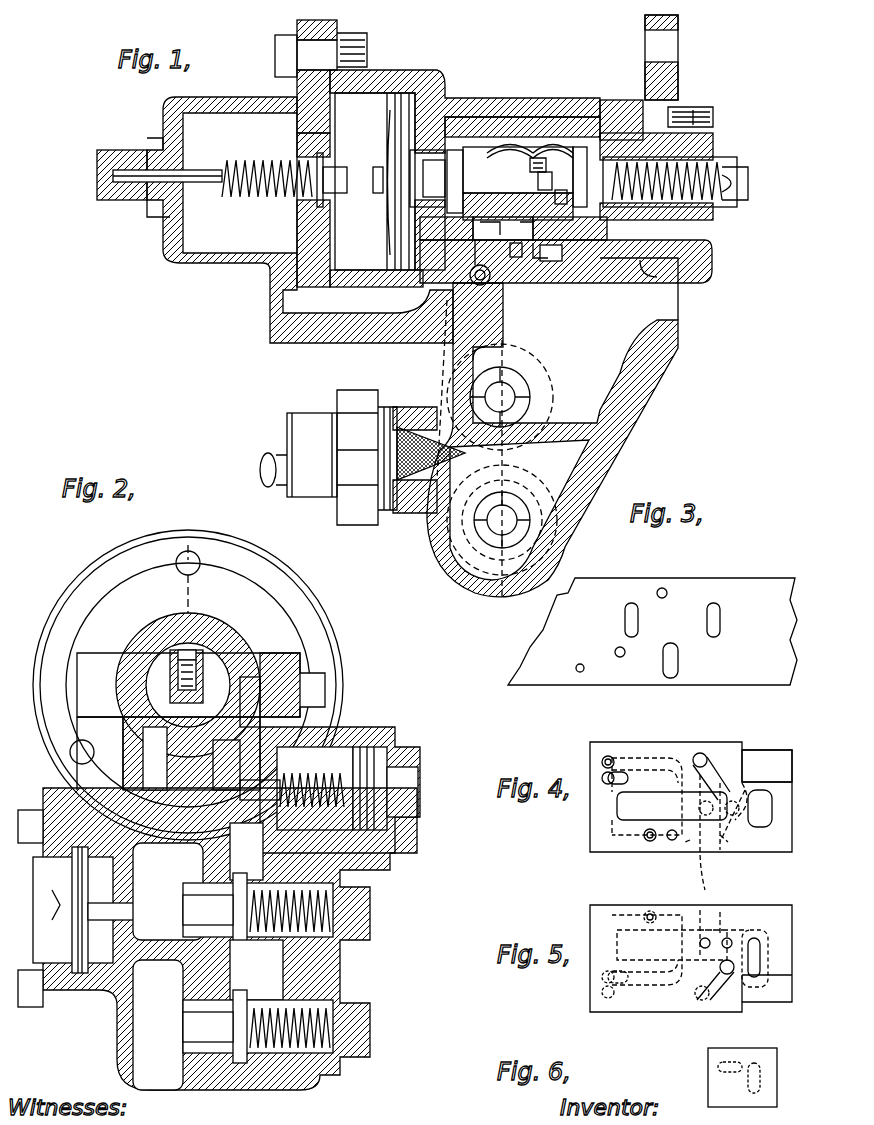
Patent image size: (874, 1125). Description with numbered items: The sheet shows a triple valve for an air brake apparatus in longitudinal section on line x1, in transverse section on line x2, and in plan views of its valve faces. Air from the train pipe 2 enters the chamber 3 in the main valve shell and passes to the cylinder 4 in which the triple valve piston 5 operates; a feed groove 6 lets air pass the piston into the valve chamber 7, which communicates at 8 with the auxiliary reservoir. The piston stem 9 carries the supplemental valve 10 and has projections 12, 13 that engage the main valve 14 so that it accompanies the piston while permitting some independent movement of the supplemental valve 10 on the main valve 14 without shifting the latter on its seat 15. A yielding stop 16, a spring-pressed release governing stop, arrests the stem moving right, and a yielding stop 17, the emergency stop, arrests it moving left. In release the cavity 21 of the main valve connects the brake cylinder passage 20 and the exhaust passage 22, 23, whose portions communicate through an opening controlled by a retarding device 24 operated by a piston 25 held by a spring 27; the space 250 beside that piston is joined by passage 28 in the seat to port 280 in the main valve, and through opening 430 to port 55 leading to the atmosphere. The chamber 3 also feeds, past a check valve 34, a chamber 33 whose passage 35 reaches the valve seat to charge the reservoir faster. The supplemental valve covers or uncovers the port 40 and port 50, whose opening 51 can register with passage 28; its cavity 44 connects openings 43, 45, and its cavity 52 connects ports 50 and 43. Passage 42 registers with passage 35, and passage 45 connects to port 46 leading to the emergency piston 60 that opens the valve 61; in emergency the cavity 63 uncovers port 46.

In FIG. 1, the train pipe 2 is at (272, 447).
In FIG. 1, the chamber 3 is at (552, 441).
In FIG. 2, the chamber 3 is at (158, 1025).
In FIG. 1, the cylinder 4 is at (375, 181).
In FIG. 1, the triple valve piston 5 is at (386, 140).
In FIG. 1, the feed groove 6 is at (416, 92).
In FIG. 1, the valve chamber 7 is at (425, 150).
In FIG. 2, the valve chamber 7 is at (150, 684).
In FIG. 1, the communication to auxiliary reservoir 8 is at (700, 230).
In FIG. 1, the piston stem 9 is at (475, 168).
In FIG. 2, the piston stem 9 is at (205, 668).
In FIG. 1, the supplemental valve 10 is at (533, 160).
In FIG. 2, the supplemental valve 10 is at (215, 690).
In FIG. 6, the supplemental valve 10 is at (708, 1093).
In FIG. 1, the projection 12 is at (450, 200).
In FIG. 1, the projection 13 is at (580, 165).
In FIG. 1, the main valve 14 is at (503, 196).
In FIG. 2, the main valve 14 is at (140, 705).
In FIG. 4, the main valve 14 is at (593, 742).
In FIG. 5, the main valve 14 is at (592, 906).
In FIG. 1, the valve seat 15 is at (562, 250).
In FIG. 1, the yielding stop 16 is at (632, 162).
In FIG. 1, the yielding stop 17 is at (335, 184).
In FIG. 1, the brake cylinder passage 20 is at (545, 258).
In FIG. 3, the brake cylinder passage 20 is at (720, 620).
In FIG. 1, the exhaust cavity 21 is at (520, 252).
In FIG. 2, the exhaust cavity 21 is at (225, 725).
In FIG. 4, the exhaust cavity 21 is at (625, 820).
In FIG. 1, the exhaust passage 22 is at (500, 243).
In FIG. 2, the exhaust passage 22 is at (283, 716).
In FIG. 3, the exhaust passage 22 is at (625, 620).
In FIG. 2, the exhaust passage 23 is at (290, 733).
In FIG. 1, the retarding device 24 is at (482, 292).
In FIG. 2, the retarding device 24 is at (300, 750).
In FIG. 2, the piston 25 is at (365, 765).
In FIG. 2, the spring 27 is at (340, 745).
In FIG. 3, the passage 28 is at (663, 588).
In FIG. 2, the chamber 33 is at (256, 970).
In FIG. 1, the check valve 34 is at (502, 503).
In FIG. 2, the check valve 34 is at (242, 1060).
In FIG. 3, the passage 35 is at (576, 668).
In FIG. 1, the port 40 is at (562, 200).
In FIG. 4, the port 40 is at (756, 812).
In FIG. 5, the port 40 is at (756, 935).
In FIG. 4, the passage 42 is at (600, 762).
In FIG. 5, the passage 42 is at (603, 993).
In FIG. 4, the port opening 43 is at (738, 842).
In FIG. 5, the port opening 43 is at (728, 938).
In FIG. 1, the cavity 44 is at (546, 180).
In FIG. 2, the cavity 44 is at (160, 655).
In FIG. 6, the cavity 44 is at (758, 1062).
In FIG. 4, the passage 45 is at (700, 753).
In FIG. 5, the passage 45 is at (728, 975).
In FIG. 3, the port 46 is at (678, 662).
In FIG. 4, the port 50 is at (708, 842).
In FIG. 5, the port 50 is at (705, 938).
In FIG. 4, the opening 51 is at (650, 842).
In FIG. 5, the opening 51 is at (650, 912).
In FIG. 6, the cavity 52 is at (718, 1066).
In FIG. 3, the port 55 is at (622, 656).
In FIG. 2, the emergency piston 60 is at (80, 965).
In FIG. 1, the valve 61 is at (533, 400).
In FIG. 2, the valve 61 is at (240, 878).
In FIG. 4, the cavity 63 is at (758, 765).
In FIG. 2, the space 250 is at (380, 780).
In FIG. 4, the port 280 is at (672, 842).
In FIG. 4, the opening 430 is at (603, 782).
In FIG. 5, the opening 430 is at (603, 978).
In FIG. 2, the section line x1 is at (188, 545).
In FIG. 1, the section line x2 is at (540, 165).